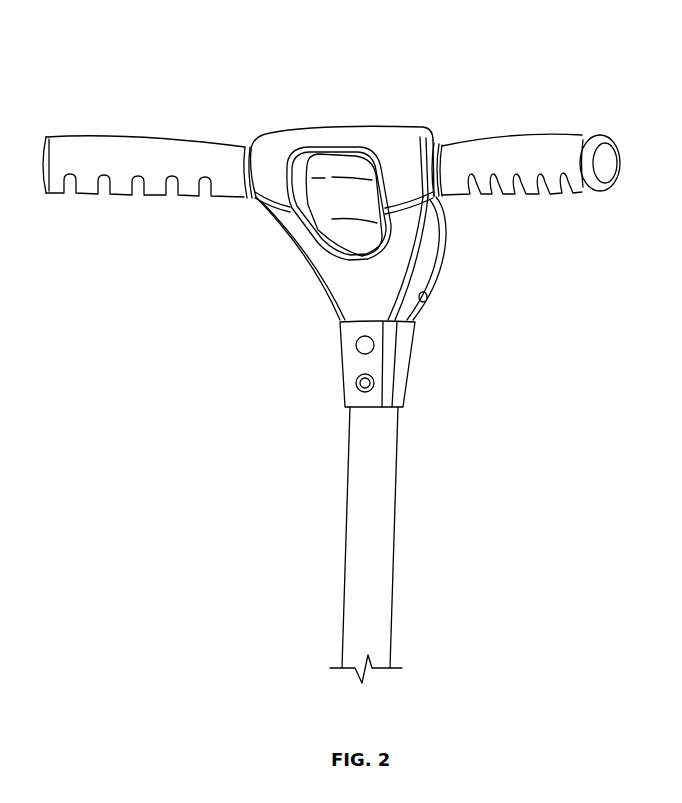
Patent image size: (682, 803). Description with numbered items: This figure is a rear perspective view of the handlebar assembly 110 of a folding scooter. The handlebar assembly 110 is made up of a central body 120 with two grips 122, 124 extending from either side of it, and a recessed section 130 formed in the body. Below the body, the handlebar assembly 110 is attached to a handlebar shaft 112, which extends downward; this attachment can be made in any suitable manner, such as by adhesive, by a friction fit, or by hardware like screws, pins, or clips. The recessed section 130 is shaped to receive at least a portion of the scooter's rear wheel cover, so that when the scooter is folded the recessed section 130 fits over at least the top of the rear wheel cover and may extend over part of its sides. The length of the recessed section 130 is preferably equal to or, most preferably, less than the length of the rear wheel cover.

The handlebar assembly 110 is at (128, 53).
The handlebar shaft 112 is at (397, 493).
The body 120 is at (308, 127).
The grip 122 is at (540, 134).
The grip 124 is at (83, 134).
The recessed section 130 is at (303, 256).